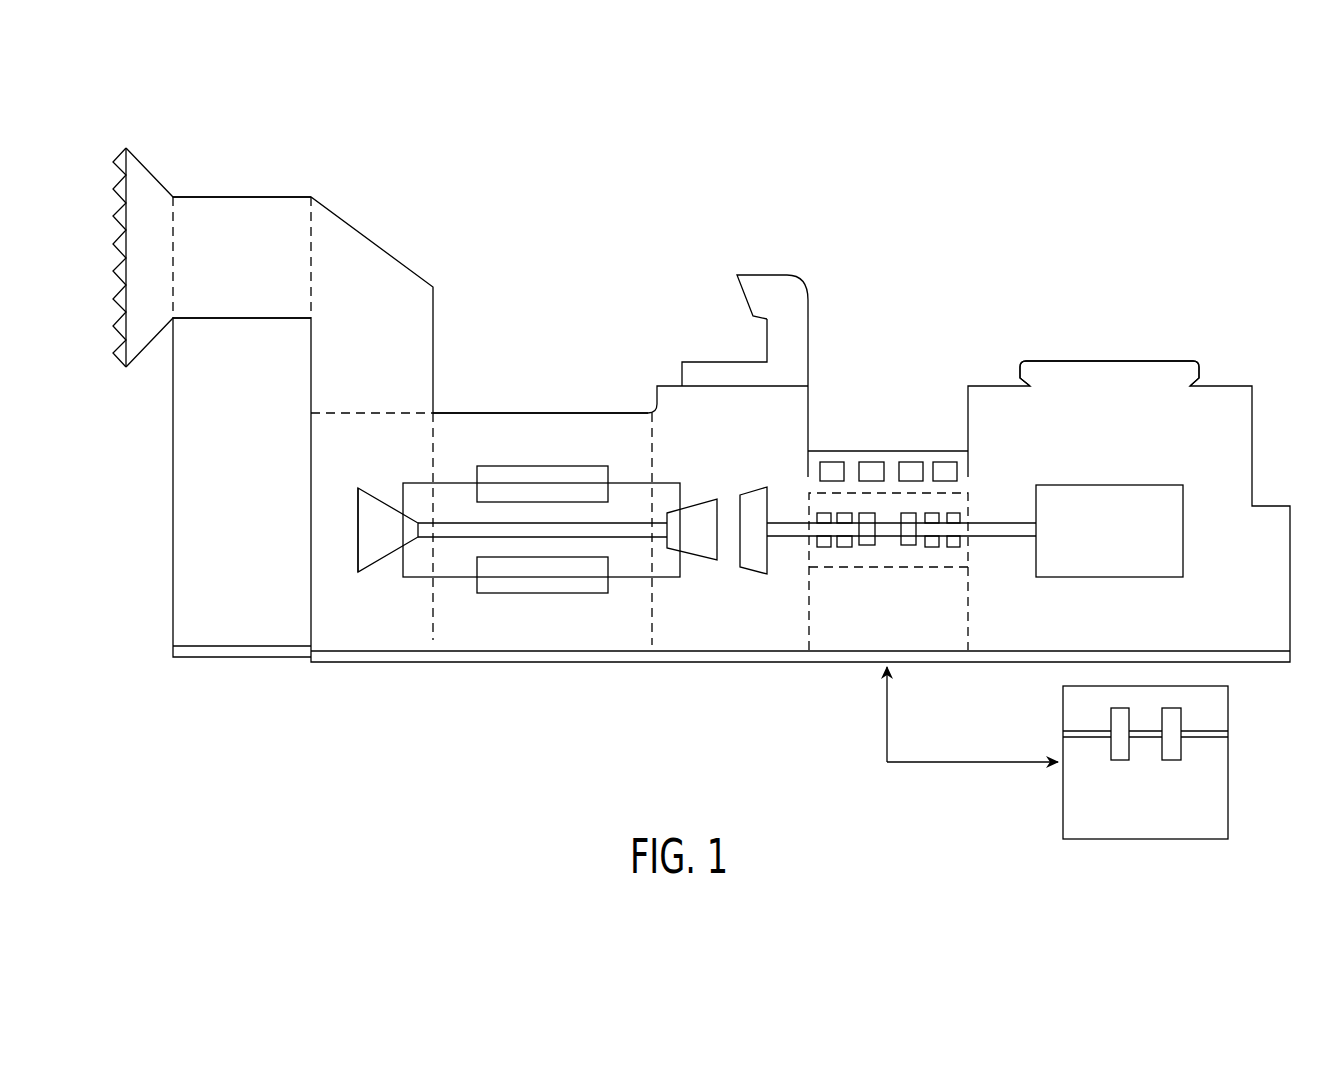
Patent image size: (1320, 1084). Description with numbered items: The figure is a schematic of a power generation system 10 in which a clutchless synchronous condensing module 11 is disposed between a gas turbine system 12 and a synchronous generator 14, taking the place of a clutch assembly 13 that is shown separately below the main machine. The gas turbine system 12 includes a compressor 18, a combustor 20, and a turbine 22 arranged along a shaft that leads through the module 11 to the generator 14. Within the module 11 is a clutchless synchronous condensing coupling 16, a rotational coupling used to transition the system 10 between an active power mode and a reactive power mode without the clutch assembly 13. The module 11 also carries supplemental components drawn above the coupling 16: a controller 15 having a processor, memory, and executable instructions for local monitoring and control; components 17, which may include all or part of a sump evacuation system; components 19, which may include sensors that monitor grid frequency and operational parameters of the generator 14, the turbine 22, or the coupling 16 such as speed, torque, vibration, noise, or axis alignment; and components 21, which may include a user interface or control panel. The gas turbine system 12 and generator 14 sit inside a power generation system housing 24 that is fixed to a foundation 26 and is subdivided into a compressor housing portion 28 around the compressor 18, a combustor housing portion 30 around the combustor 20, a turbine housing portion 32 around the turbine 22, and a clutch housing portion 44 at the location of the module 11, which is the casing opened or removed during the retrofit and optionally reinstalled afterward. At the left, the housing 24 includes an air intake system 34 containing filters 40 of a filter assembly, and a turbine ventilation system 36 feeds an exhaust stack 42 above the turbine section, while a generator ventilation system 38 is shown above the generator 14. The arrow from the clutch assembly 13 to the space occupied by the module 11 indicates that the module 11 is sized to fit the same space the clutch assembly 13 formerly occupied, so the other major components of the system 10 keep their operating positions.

The power generation system 10 is at (667, 170).
The clutchless synchronous condensing module 11 is at (912, 378).
The gas turbine system 12 is at (412, 437).
The clutch assembly 13 is at (1145, 840).
The synchronous generator 14 is at (1110, 485).
The controller 15 is at (826, 462).
The clutchless synchronous condensing coupling 16 is at (928, 493).
The components 17 is at (866, 462).
The compressor 18 is at (378, 490).
The components 19 is at (906, 462).
The combustor 20 is at (543, 466).
The components 21 is at (944, 462).
The turbine 22 is at (727, 490).
The power generation system housing 24 is at (538, 412).
The foundation 26 is at (505, 655).
The compressor housing portion 28 is at (348, 597).
The combustor housing portion 30 is at (583, 622).
The turbine housing portion 32 is at (765, 577).
The air intake system 34 is at (273, 173).
The turbine ventilation system 36 is at (730, 338).
The generator ventilation system 38 is at (1172, 344).
The filters 40 is at (225, 218).
The exhaust stack 42 is at (790, 325).
The clutch housing portion 44 is at (968, 605).